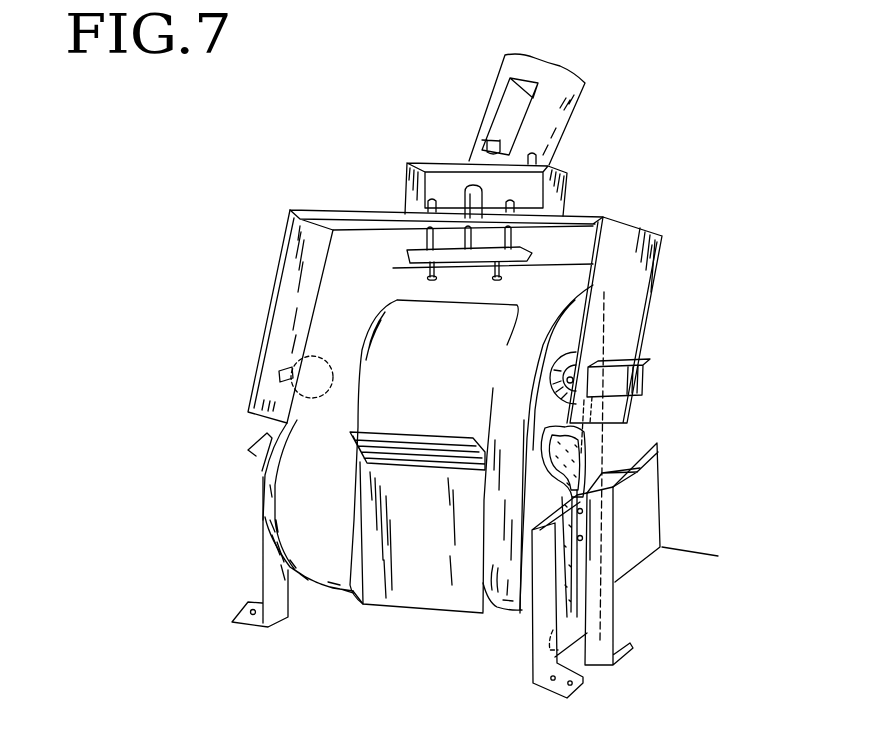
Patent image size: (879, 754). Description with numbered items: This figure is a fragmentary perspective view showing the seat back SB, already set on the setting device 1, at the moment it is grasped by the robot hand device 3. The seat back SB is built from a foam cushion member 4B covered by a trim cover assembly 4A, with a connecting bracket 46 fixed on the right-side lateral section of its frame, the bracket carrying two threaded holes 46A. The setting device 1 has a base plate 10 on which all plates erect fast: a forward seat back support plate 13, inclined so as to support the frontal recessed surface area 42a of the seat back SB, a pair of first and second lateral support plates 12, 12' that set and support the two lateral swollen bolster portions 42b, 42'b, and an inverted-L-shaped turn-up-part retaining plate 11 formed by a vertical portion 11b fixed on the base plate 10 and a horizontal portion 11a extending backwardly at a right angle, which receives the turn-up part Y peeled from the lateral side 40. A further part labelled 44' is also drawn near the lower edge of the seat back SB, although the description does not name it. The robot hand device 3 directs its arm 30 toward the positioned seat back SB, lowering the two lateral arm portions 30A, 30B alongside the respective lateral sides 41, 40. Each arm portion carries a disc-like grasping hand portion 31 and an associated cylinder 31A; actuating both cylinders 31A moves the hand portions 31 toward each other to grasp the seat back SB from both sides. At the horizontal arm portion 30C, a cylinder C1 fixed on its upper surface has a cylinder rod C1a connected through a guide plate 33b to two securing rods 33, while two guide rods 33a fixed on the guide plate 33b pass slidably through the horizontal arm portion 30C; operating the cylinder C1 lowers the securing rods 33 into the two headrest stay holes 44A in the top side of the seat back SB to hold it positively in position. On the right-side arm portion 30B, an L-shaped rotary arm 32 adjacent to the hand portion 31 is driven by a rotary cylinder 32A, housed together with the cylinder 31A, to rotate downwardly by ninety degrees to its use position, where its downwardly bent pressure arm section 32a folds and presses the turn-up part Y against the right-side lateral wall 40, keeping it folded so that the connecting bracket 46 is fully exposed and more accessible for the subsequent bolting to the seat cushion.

The setting device 1 is at (241, 584).
The robot hand device 3 is at (566, 122).
The base plate 10 is at (390, 684).
The turn-up-part retaining plate 11 is at (600, 662).
The horizontal portion 11a is at (630, 487).
The vertical portion 11b is at (605, 531).
The first seat back lateral support plate 12 is at (262, 574).
The second seat back lateral support plate 12' is at (536, 605).
The forward seat back support plate 13 is at (417, 597).
The arm 30 is at (283, 213).
The left-side arm portion 30A is at (278, 276).
The right-side arm portion 30B is at (667, 242).
The horizontal arm portion 30C is at (322, 212).
The grasping hand portion 31 is at (292, 360).
The cylinder 31A is at (642, 378).
The rotary arm 32 is at (580, 437).
The pressure arm section 32a is at (607, 443).
The rotary cylinder 32A is at (690, 378).
The securing rod 33 is at (440, 267).
The guide rod 33a is at (460, 252).
The guide plate 33b is at (575, 217).
The lateral side 40 is at (570, 337).
The lateral side 41 is at (286, 404).
The frontal recessed surface area 42a is at (378, 353).
The lateral swollen bolster portion 42b is at (283, 493).
The lateral swollen bolster portion 42'b is at (509, 501).
The headrest stay hole 44A is at (378, 353).
The lower guide 44' is at (332, 640).
The connecting bracket 46 is at (578, 583).
The threaded hole 46A is at (583, 542).
The trim cover assembly 4A is at (505, 565).
The foam cushion member 4B is at (560, 467).
The cylinder C1 is at (470, 205).
The cylinder rod C1a is at (462, 245).
The seat back SB is at (274, 426).
The turn-up part Y is at (527, 452).